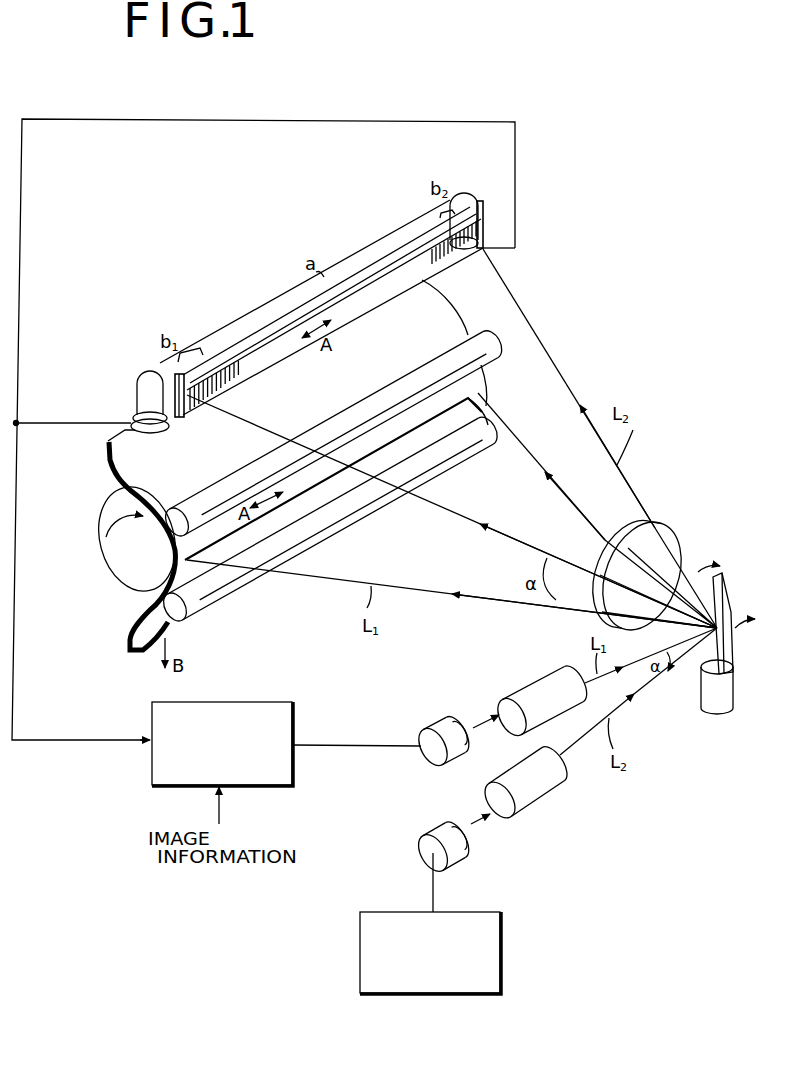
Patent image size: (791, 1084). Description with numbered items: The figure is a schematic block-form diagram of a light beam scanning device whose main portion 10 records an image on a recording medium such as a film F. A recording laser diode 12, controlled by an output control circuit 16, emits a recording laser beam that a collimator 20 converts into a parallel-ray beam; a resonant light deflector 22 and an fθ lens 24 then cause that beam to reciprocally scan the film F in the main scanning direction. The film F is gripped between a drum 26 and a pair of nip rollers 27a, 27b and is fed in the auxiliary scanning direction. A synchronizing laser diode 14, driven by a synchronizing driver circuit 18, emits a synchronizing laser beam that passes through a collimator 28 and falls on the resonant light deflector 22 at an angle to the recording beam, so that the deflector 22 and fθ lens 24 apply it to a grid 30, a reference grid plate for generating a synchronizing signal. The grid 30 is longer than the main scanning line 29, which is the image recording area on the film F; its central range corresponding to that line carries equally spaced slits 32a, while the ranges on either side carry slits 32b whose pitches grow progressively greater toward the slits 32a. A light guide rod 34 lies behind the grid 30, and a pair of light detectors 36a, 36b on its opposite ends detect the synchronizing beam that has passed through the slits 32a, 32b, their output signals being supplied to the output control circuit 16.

The main portion 10 is at (588, 362).
The recording laser diode 12 is at (450, 724).
The synchronizing laser diode 14 is at (465, 849).
The output control circuit 16 is at (257, 702).
The synchronizing driver circuit 18 is at (503, 943).
The collimator 20 is at (537, 694).
The resonant light deflector 22 is at (726, 576).
The fθ lens 24 is at (667, 530).
The drum 26 is at (118, 551).
The nip roller 27a is at (498, 362).
The nip roller 27b is at (478, 448).
The collimator 28 is at (534, 791).
The main scanning line 29 is at (372, 452).
The grid 30 is at (445, 267).
The slits 32a is at (233, 364).
The slits 32b is at (185, 402).
The light guide rod 34 is at (367, 250).
The light detector 36a is at (149, 406).
The light detector 36b is at (467, 194).
The film F is at (142, 636).